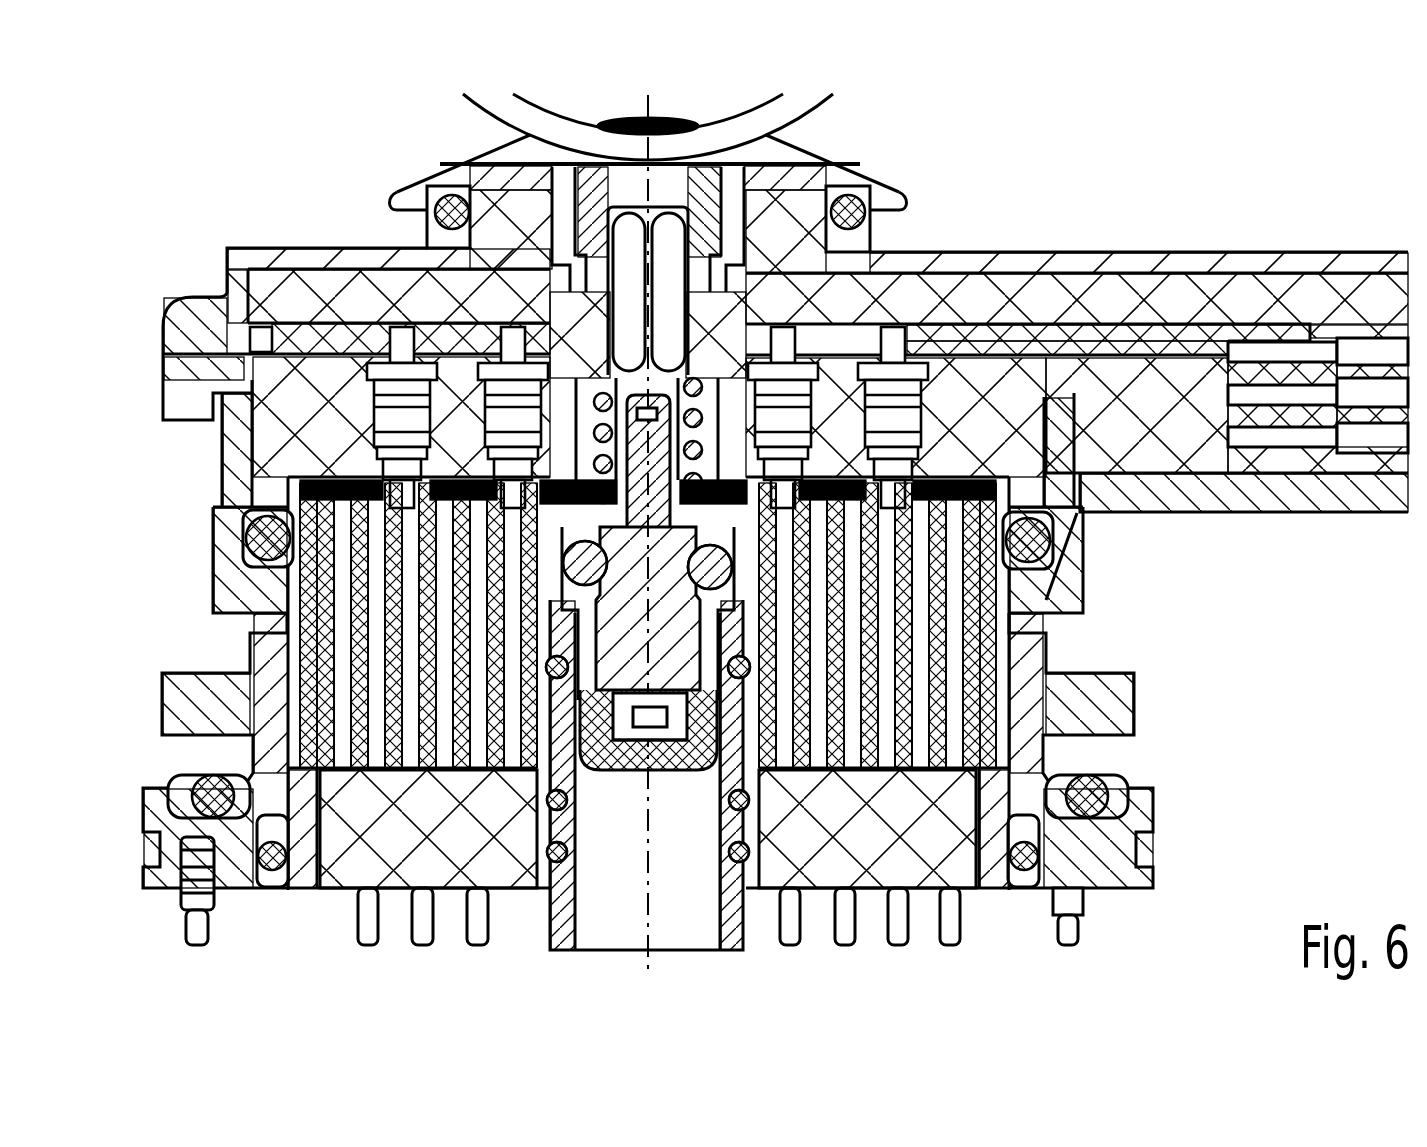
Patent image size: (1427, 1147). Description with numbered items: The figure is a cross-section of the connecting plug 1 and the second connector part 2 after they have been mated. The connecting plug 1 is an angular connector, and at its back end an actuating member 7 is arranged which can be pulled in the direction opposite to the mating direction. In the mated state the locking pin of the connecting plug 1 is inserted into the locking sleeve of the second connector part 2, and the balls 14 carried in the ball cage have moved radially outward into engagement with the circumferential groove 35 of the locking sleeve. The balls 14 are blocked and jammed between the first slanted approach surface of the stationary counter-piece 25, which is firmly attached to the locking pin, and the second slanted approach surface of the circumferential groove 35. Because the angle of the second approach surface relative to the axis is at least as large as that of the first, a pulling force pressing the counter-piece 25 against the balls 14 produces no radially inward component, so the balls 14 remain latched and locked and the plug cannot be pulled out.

The connecting plug 1 is at (1100, 201).
The second connector part 2 is at (1158, 745).
The actuating member 7 is at (438, 184).
The balls 14 is at (636, 630).
The counter-piece 25 is at (692, 665).
The circumferential groove 35 is at (915, 612).